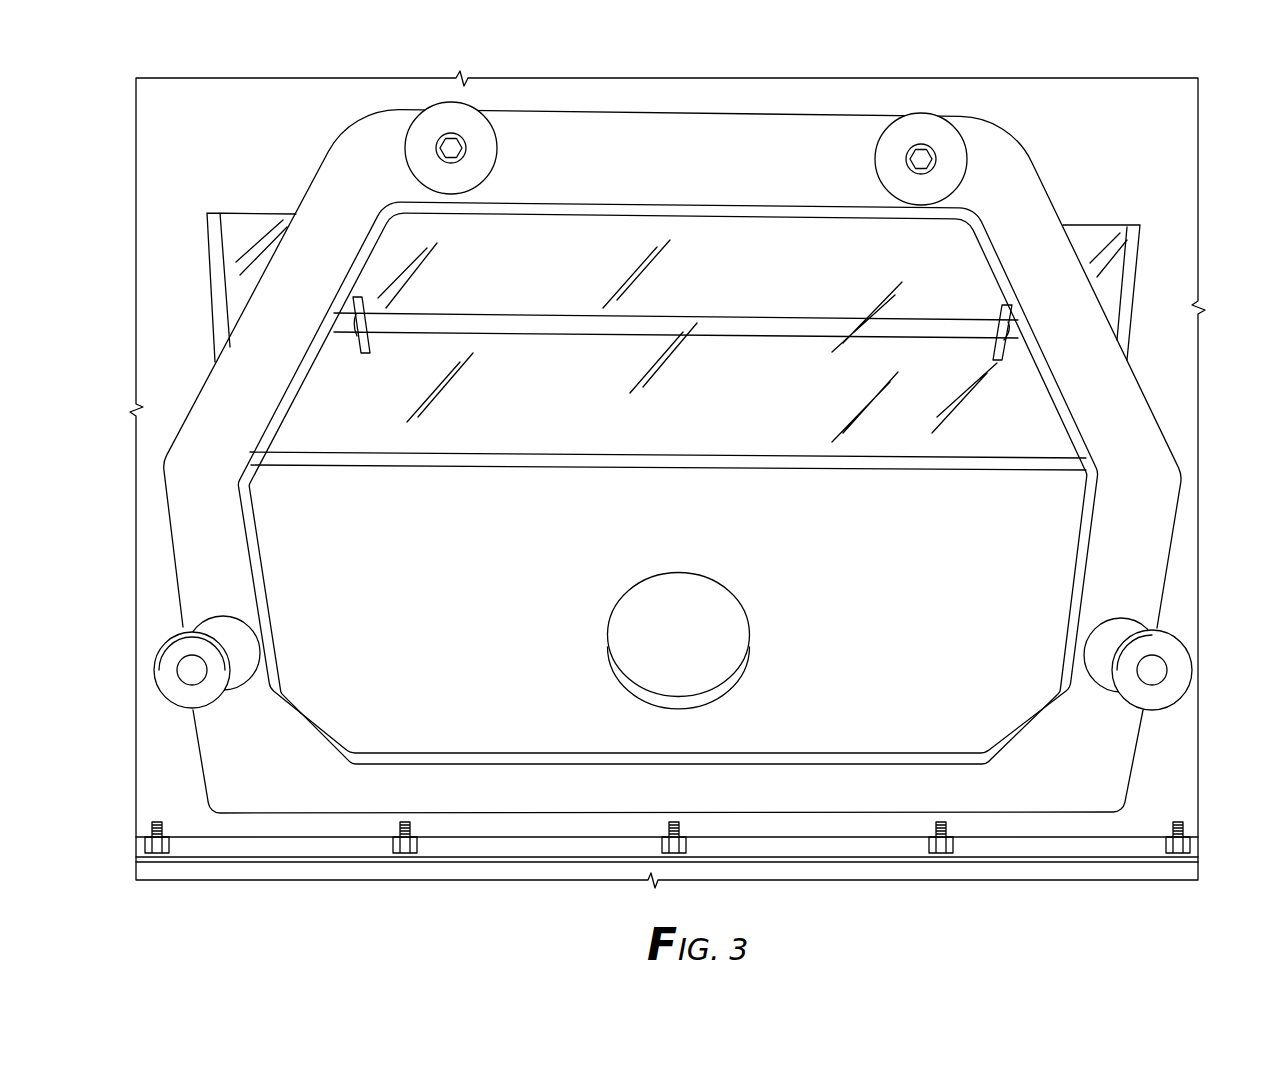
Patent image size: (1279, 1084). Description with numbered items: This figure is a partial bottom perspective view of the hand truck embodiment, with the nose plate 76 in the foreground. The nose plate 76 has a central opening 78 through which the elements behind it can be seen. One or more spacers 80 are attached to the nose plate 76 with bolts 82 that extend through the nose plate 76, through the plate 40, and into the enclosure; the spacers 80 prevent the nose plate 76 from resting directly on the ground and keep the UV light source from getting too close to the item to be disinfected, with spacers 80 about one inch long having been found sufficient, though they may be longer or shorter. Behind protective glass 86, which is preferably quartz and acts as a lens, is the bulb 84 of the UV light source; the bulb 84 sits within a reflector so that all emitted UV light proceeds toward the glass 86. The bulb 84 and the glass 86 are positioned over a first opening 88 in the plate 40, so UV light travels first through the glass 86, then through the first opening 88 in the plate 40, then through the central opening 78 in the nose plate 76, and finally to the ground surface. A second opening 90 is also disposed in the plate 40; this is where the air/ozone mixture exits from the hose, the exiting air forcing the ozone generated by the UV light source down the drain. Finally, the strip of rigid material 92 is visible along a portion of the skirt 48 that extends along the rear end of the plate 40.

The plate 40 is at (938, 583).
The skirt 48 is at (1050, 873).
The nose plate 76 is at (1030, 195).
The central opening 78 is at (1106, 517).
The spacers 80 is at (478, 130).
The bolts 82 is at (447, 138).
The bulb 84 is at (737, 323).
The protective glass 86 is at (533, 250).
The first opening 88 is at (610, 477).
The second opening 90 is at (623, 688).
The strip of rigid material 92 is at (998, 848).